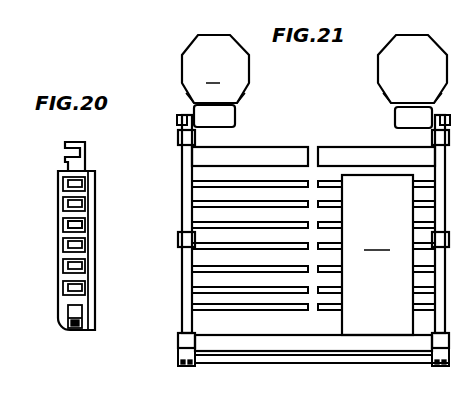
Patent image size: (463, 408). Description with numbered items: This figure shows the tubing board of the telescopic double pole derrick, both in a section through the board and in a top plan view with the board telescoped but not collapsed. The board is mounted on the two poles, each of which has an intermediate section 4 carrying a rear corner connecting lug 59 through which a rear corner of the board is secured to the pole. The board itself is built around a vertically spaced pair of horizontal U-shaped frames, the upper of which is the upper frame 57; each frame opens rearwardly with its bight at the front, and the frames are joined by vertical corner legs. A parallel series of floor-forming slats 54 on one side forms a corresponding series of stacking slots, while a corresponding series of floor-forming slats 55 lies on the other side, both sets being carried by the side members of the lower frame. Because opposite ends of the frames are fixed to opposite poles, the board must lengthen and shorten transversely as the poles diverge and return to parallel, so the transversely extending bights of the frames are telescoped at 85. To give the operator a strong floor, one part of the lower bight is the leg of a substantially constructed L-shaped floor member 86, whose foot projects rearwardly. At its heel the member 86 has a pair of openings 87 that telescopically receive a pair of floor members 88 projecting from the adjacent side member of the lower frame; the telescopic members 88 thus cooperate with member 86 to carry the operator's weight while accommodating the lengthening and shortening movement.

In FIG. 21, the intermediate section 4 is at (314, 69).
In FIG. 21, the rear corner connecting lug 59 is at (396, 116).
In FIG. 21, the upper U-shaped frame 57 is at (172, 309).
In FIG. 21, the floor-forming slats 54 is at (274, 257).
In FIG. 20, the floor-forming slats 55 is at (66, 229).
In FIG. 21, the floor-forming slats 55 is at (337, 227).
In FIG. 20, the L-shaped floor member 86 is at (62, 184).
In FIG. 21, the L-shaped floor member 86 is at (377, 255).
In FIG. 21, the floor members 88 is at (420, 313).
In FIG. 21, the telescoped bight portion 85 is at (430, 366).
In FIG. 20, the openings 87 is at (75, 331).